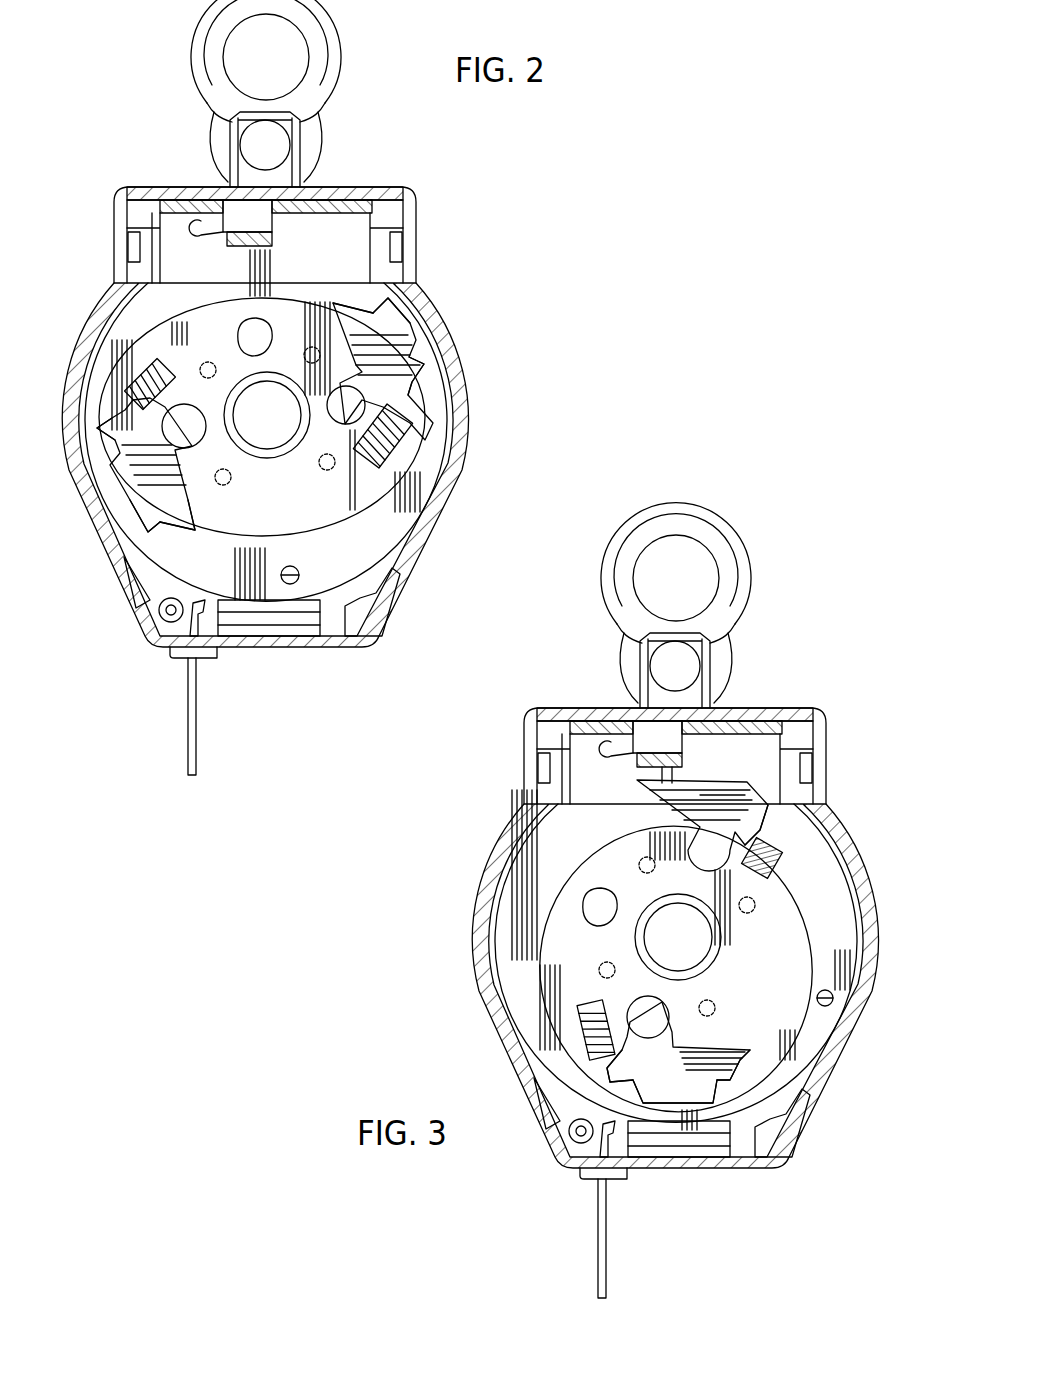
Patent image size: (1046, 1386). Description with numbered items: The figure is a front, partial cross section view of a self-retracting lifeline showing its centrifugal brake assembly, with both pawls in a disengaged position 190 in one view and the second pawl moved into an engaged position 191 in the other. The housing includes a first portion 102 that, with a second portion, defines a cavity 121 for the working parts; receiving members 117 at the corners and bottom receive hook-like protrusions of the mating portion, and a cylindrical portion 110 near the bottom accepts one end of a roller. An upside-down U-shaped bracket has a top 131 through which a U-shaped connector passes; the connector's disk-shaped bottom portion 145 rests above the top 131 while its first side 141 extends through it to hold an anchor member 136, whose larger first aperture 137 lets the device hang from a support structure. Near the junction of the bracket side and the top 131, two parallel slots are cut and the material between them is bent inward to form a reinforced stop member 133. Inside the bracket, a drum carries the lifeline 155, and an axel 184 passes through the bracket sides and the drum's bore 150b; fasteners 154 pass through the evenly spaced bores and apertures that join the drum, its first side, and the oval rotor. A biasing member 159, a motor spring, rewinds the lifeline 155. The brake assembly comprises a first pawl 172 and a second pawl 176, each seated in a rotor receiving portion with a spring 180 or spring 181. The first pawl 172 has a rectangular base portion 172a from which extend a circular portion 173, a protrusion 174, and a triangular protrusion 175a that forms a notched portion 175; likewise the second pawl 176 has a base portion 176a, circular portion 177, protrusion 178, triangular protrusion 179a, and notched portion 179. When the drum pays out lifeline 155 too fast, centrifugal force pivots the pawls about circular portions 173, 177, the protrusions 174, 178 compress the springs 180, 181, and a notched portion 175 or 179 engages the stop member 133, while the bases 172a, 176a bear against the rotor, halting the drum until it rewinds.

In FIG. 2, the first portion 102 is at (402, 197).
In FIG. 3, the first portion 102 is at (820, 710).
In FIG. 2, the cylindrical portion 110 is at (158, 615).
In FIG. 3, the cylindrical portion 110 is at (581, 1131).
In FIG. 2, the receiving members 117 is at (136, 243).
In FIG. 3, the receiving members 117 is at (546, 763).
In FIG. 2, the cavity 121 is at (415, 500).
In FIG. 3, the cavity 121 is at (805, 968).
In FIG. 2, the top 131 is at (333, 202).
In FIG. 3, the top 131 is at (676, 727).
In FIG. 2, the stop member 133 is at (242, 246).
In FIG. 3, the stop member 133 is at (640, 768).
In FIG. 2, the anchor member 136 is at (318, 32).
In FIG. 3, the anchor member 136 is at (717, 523).
In FIG. 2, the first aperture 137 is at (300, 67).
In FIG. 3, the first aperture 137 is at (713, 570).
In FIG. 2, the first side 141 is at (237, 143).
In FIG. 3, the first side 141 is at (643, 650).
In FIG. 2, the bottom portion 145 is at (217, 220).
In FIG. 3, the bottom portion 145 is at (630, 735).
In FIG. 2, the bore 150b is at (267, 437).
In FIG. 3, the bore 150b is at (685, 945).
In FIG. 2, the fasteners 154 is at (203, 362).
In FIG. 3, the fasteners 154 is at (643, 863).
In FIG. 2, the lifeline 155 is at (187, 726).
In FIG. 3, the lifeline 155 is at (597, 1267).
In FIG. 2, the biasing member 159 is at (194, 226).
In FIG. 3, the biasing member 159 is at (605, 746).
In FIG. 3, the first pawl 172 is at (733, 1050).
In FIG. 2, the base portion 172a is at (130, 484).
In FIG. 2, the circular portion 173 is at (182, 425).
In FIG. 2, the protrusion 174 is at (128, 435).
In FIG. 3, the protrusion 174 is at (620, 1060).
In FIG. 2, the notched portion 175 is at (164, 528).
In FIG. 3, the notched portion 175 is at (724, 1077).
In FIG. 2, the triangular protrusion 175a is at (197, 518).
In FIG. 3, the second pawl 176 is at (680, 787).
In FIG. 2, the base portion 176a is at (394, 327).
In FIG. 2, the circular portion 177 is at (351, 407).
In FIG. 2, the protrusion 178 is at (407, 387).
In FIG. 3, the protrusion 178 is at (753, 825).
In FIG. 2, the notched portion 179 is at (372, 305).
In FIG. 2, the triangular protrusion 179a is at (345, 316).
In FIG. 2, the spring 180 is at (138, 376).
In FIG. 3, the spring 180 is at (587, 1003).
In FIG. 2, the spring 181 is at (400, 447).
In FIG. 3, the spring 181 is at (770, 870).
In FIG. 2, the axel 184 is at (282, 137).
In FIG. 3, the axel 184 is at (703, 660).
In FIG. 3, the disengaged position 190 is at (673, 1093).
In FIG. 3, the engaged position 191 is at (724, 785).